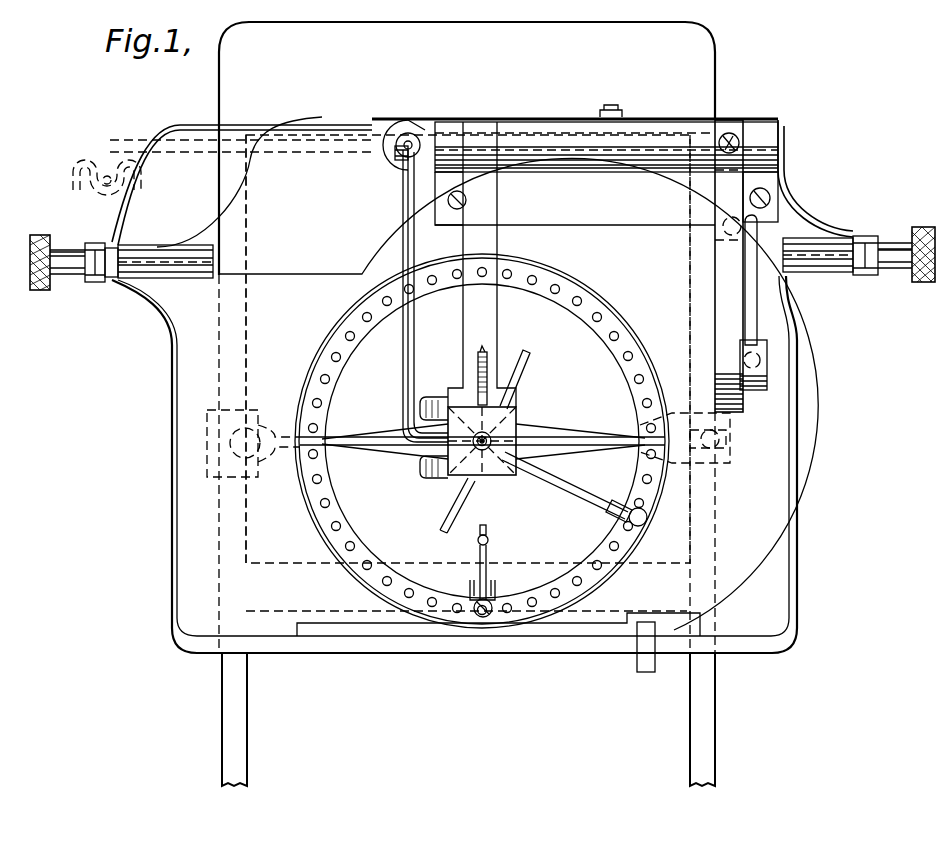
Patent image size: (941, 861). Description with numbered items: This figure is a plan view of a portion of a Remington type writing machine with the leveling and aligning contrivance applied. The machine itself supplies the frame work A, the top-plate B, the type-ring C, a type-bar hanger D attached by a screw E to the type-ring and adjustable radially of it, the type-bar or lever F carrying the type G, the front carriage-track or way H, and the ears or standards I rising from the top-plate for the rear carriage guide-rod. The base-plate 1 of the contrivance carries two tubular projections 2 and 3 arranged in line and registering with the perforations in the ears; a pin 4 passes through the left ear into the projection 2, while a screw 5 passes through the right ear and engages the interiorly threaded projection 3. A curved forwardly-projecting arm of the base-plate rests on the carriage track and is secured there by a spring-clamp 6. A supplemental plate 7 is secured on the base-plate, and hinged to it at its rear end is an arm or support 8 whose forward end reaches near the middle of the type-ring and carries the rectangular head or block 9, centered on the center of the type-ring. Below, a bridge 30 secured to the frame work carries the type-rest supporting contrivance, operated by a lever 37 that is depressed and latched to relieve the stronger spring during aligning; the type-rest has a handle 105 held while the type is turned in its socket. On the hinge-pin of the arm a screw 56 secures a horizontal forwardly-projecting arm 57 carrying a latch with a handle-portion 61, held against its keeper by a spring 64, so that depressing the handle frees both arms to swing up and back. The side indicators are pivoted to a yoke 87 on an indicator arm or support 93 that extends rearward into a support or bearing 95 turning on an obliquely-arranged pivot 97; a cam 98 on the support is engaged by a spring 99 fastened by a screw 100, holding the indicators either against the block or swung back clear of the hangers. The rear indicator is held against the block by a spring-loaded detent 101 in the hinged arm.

The base-plate 1 is at (738, 574).
The tubular projection 2 is at (160, 279).
The tubular projection 3 is at (783, 251).
The pin 4 is at (110, 280).
The screw 5 is at (900, 247).
The spring-clamp 6 is at (637, 670).
The supplemental plate 7 is at (501, 198).
The arm or support 8 is at (468, 300).
The head or block 9 is at (508, 476).
The bridge 30 is at (483, 428).
The lever 37 is at (482, 430).
The screw 56 is at (731, 133).
The arm 57 is at (746, 266).
The handle-portion 61 is at (758, 392).
The spring 64 is at (750, 290).
The yoke 87 is at (107, 168).
The indicator arm or support 93 is at (403, 238).
The support or bearing 95 is at (400, 162).
The pivot 97 is at (411, 137).
The cam 98 is at (386, 163).
The spring 99 is at (500, 118).
The screw 100 is at (614, 110).
The detent 101 is at (486, 366).
The handle 105 is at (528, 358).
The frame work A is at (724, 700).
The top-plate B is at (177, 345).
The type-ring C is at (482, 441).
The type-bar hanger D is at (496, 588).
The screw E is at (485, 618).
The type-bar or lever F is at (543, 526).
The type G is at (486, 528).
The front carriage-track or way H is at (591, 637).
The ears or standards I is at (108, 244).